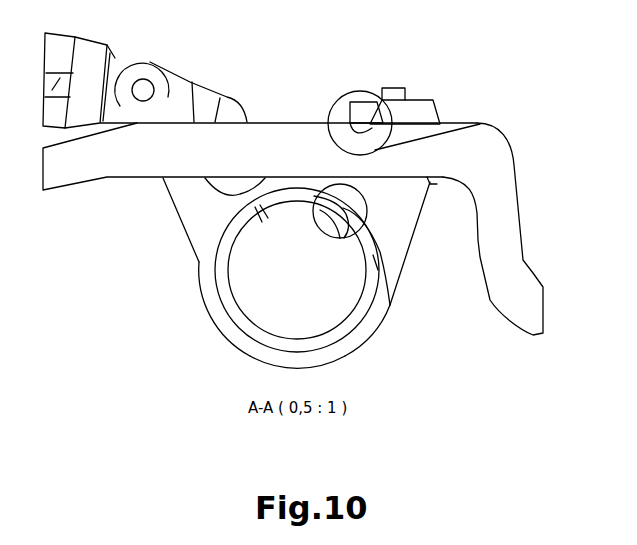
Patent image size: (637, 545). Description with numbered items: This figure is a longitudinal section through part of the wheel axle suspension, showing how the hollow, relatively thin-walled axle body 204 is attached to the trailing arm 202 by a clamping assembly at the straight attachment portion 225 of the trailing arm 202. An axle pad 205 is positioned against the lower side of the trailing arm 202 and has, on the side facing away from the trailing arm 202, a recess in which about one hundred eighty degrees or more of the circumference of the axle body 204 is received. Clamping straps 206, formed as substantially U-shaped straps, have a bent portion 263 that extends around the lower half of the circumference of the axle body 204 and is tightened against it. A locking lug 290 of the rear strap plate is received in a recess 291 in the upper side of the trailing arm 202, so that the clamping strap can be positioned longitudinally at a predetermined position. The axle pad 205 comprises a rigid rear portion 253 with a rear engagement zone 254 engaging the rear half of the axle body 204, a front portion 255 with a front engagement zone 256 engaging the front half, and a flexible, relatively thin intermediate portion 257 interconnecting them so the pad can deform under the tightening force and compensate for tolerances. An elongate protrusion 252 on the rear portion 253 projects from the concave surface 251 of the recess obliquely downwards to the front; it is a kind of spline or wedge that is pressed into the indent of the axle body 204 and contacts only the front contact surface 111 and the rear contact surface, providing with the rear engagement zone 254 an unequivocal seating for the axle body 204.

The trailing arm 202 is at (100, 163).
The axle body 204 is at (373, 310).
The axle pad 205 is at (258, 203).
The clamping straps 206 is at (207, 303).
The front contact surface 111 is at (340, 236).
The attachment portion 225 is at (255, 143).
The concave surface of the recess 251 is at (252, 210).
The elongate protrusion 252 is at (385, 203).
The rear portion 253 is at (390, 225).
The rear engagement zone 254 is at (380, 263).
The front portion 255 is at (202, 212).
The front engagement zone 256 is at (213, 253).
The intermediate portion 257 is at (280, 187).
The bent portion 263 is at (237, 352).
The locking lug 290 is at (355, 130).
The recess 291 is at (472, 132).